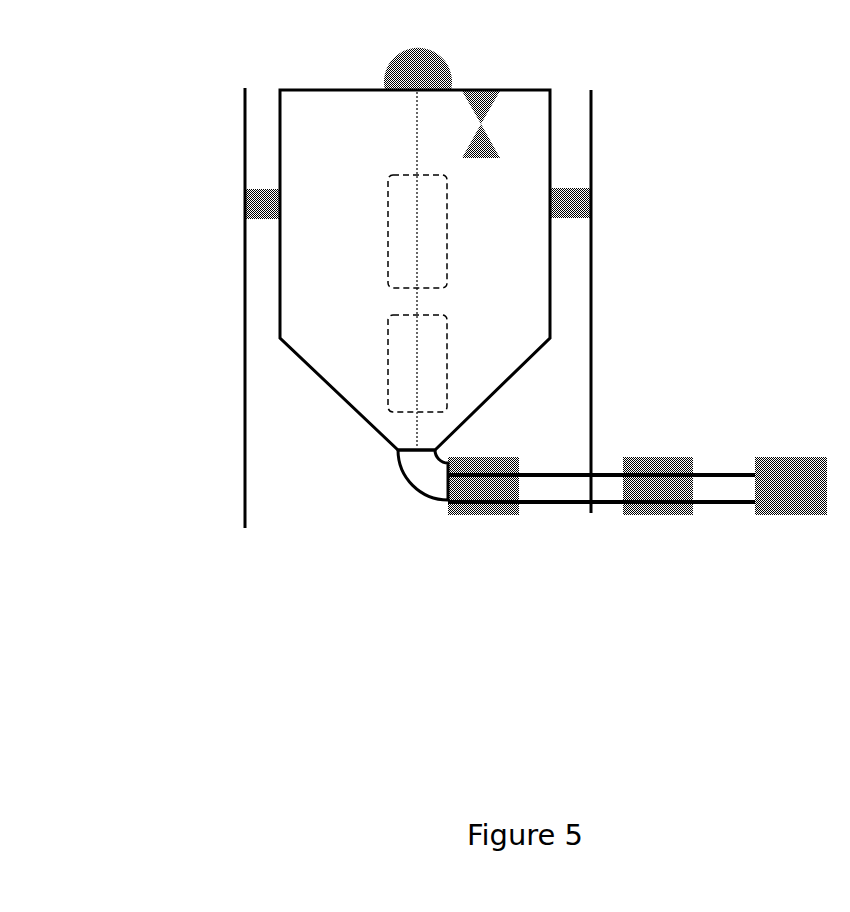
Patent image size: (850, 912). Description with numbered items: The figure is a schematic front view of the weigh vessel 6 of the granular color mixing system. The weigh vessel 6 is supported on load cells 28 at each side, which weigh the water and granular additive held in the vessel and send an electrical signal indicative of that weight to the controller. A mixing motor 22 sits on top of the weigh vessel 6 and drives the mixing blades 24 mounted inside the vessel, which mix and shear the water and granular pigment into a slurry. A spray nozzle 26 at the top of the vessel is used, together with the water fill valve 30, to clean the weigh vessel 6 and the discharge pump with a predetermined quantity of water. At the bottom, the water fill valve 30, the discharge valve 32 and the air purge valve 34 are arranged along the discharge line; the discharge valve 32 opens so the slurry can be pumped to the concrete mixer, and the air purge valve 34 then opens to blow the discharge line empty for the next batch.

The weigh vessel 6 is at (415, 270).
The mixing motor 22 is at (387, 72).
The mixing blades 24 is at (425, 225).
The spray nozzle 26 is at (478, 92).
The load cells 28 is at (255, 223).
The water fill valve 30 is at (438, 510).
The discharge valve 32 is at (620, 515).
The air purge valve 34 is at (770, 513).